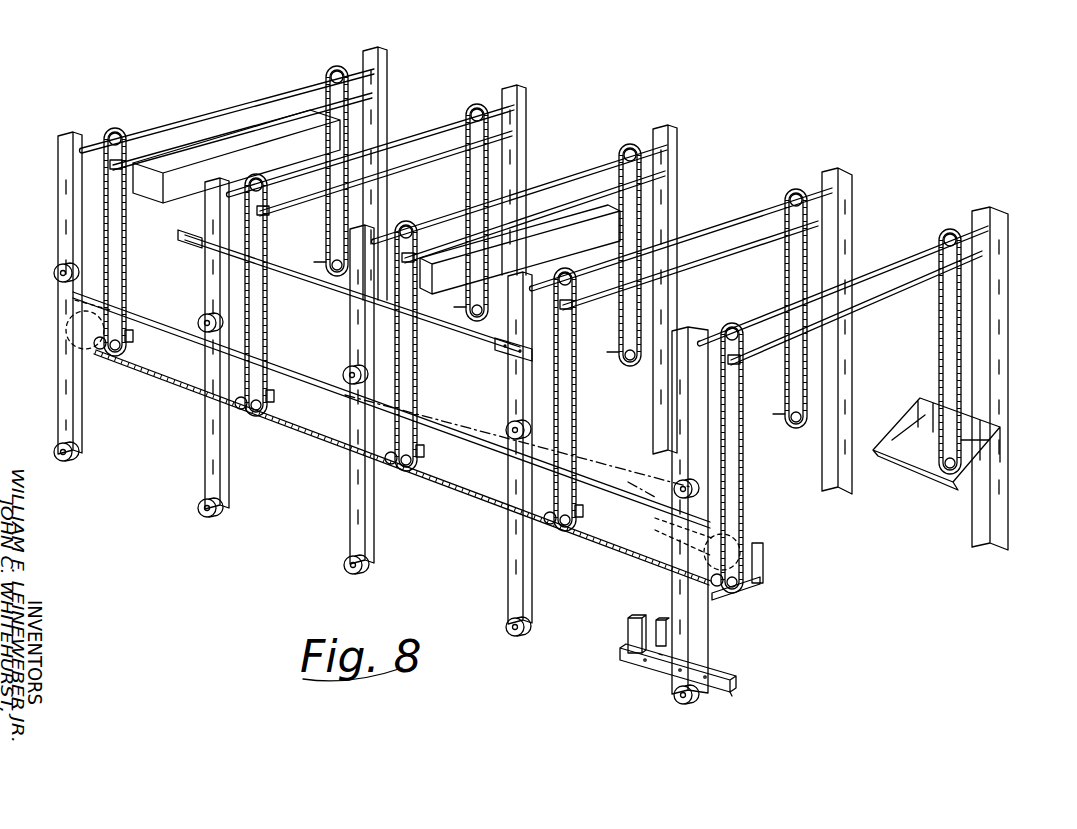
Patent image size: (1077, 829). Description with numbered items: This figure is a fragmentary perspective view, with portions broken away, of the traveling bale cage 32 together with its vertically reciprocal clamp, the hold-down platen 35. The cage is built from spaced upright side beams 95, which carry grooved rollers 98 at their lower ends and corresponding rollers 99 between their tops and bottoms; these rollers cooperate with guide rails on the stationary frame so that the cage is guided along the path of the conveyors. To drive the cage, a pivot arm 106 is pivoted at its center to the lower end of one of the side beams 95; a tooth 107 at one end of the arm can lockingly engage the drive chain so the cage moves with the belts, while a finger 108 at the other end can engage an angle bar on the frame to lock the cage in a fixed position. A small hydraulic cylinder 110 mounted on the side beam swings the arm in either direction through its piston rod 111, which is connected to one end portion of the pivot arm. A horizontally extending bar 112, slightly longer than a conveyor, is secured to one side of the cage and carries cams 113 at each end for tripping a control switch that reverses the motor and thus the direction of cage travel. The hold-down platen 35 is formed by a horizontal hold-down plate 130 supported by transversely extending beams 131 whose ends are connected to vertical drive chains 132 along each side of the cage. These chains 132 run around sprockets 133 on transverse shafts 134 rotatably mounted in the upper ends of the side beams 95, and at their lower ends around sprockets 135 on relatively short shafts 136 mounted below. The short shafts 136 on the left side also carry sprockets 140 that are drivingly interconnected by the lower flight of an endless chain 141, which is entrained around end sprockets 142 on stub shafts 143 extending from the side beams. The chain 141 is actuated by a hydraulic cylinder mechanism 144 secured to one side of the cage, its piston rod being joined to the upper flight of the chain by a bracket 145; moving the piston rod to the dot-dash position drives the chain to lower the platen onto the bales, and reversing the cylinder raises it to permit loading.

The traveling bale cage 32 is at (226, 95).
The vertical hold-down platen 35 is at (600, 176).
The side beams 95 is at (60, 240).
The rollers 98 is at (63, 461).
The rollers 99 is at (53, 276).
The pivot arm 106 is at (646, 665).
The tooth 107 is at (640, 616).
The finger 108 is at (733, 694).
The hydraulic cylinder 110 is at (662, 618).
The piston rod 111 is at (662, 660).
The horizontally extending bar 112 is at (300, 278).
The cams 113 is at (185, 250).
The horizontal hold-down plate 130 is at (268, 156).
The transversely extending beams 131 is at (185, 128).
The vertical drive chains 132 is at (116, 228).
The sprockets 133 is at (336, 66).
The transverse shafts 134 is at (262, 90).
The sprockets 135 is at (326, 248).
The short shafts 136 is at (328, 262).
The sprockets 140 is at (102, 352).
The chain 141 is at (462, 498).
The end sprockets 142 is at (112, 312).
The stub shafts 143 is at (68, 340).
The hydraulic cylinder mechanism 144 is at (333, 372).
The bracket 145 is at (424, 412).